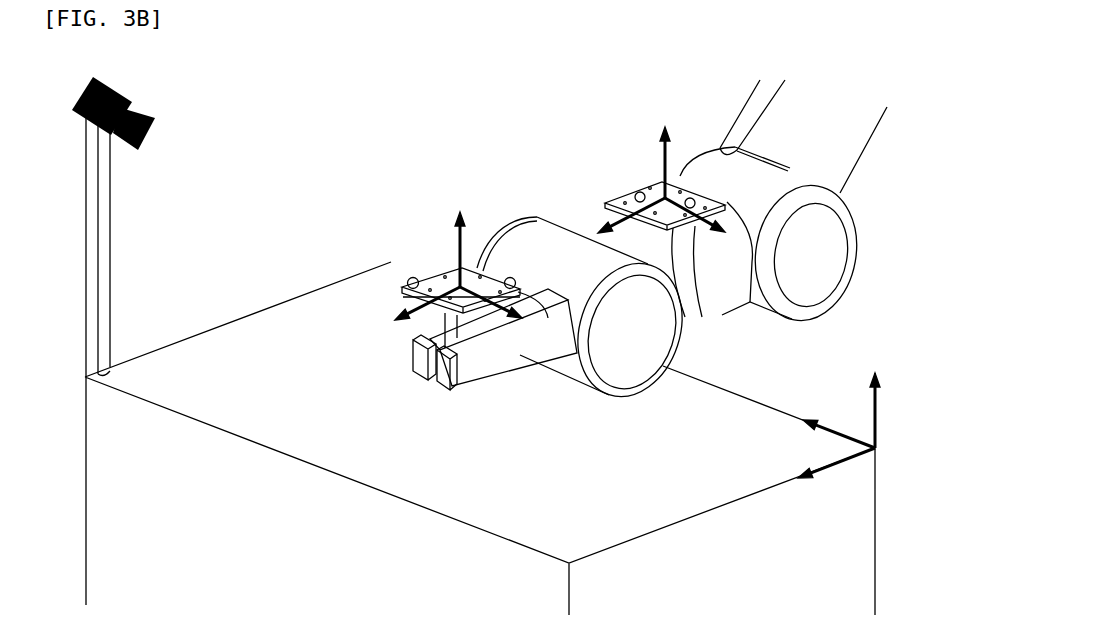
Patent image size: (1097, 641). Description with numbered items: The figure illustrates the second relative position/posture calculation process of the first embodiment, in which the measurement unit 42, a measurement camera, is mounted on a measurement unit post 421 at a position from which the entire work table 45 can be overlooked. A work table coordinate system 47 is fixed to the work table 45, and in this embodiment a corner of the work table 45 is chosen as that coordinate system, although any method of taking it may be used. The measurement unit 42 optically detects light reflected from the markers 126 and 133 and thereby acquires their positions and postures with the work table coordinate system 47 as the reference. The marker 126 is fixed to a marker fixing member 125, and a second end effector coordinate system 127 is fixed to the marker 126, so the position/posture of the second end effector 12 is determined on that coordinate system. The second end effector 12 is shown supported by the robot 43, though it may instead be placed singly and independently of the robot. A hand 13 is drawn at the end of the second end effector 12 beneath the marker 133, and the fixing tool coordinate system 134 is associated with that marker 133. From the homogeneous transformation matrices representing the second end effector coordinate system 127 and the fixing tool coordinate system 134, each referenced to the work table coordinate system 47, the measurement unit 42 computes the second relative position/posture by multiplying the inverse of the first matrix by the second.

The measurement unit 42 is at (118, 88).
The measurement unit post 421 is at (112, 197).
The work table 45 is at (878, 575).
The work table coordinate system 47 is at (878, 373).
The robot 43 is at (893, 133).
The marker fixing member 125 is at (698, 308).
The marker 126 is at (627, 193).
The second end effector coordinate system 127 is at (655, 127).
The second end effector 12 is at (538, 215).
The hand 13 is at (410, 347).
The marker 133 is at (400, 278).
The fixing tool coordinate system 134 is at (447, 205).